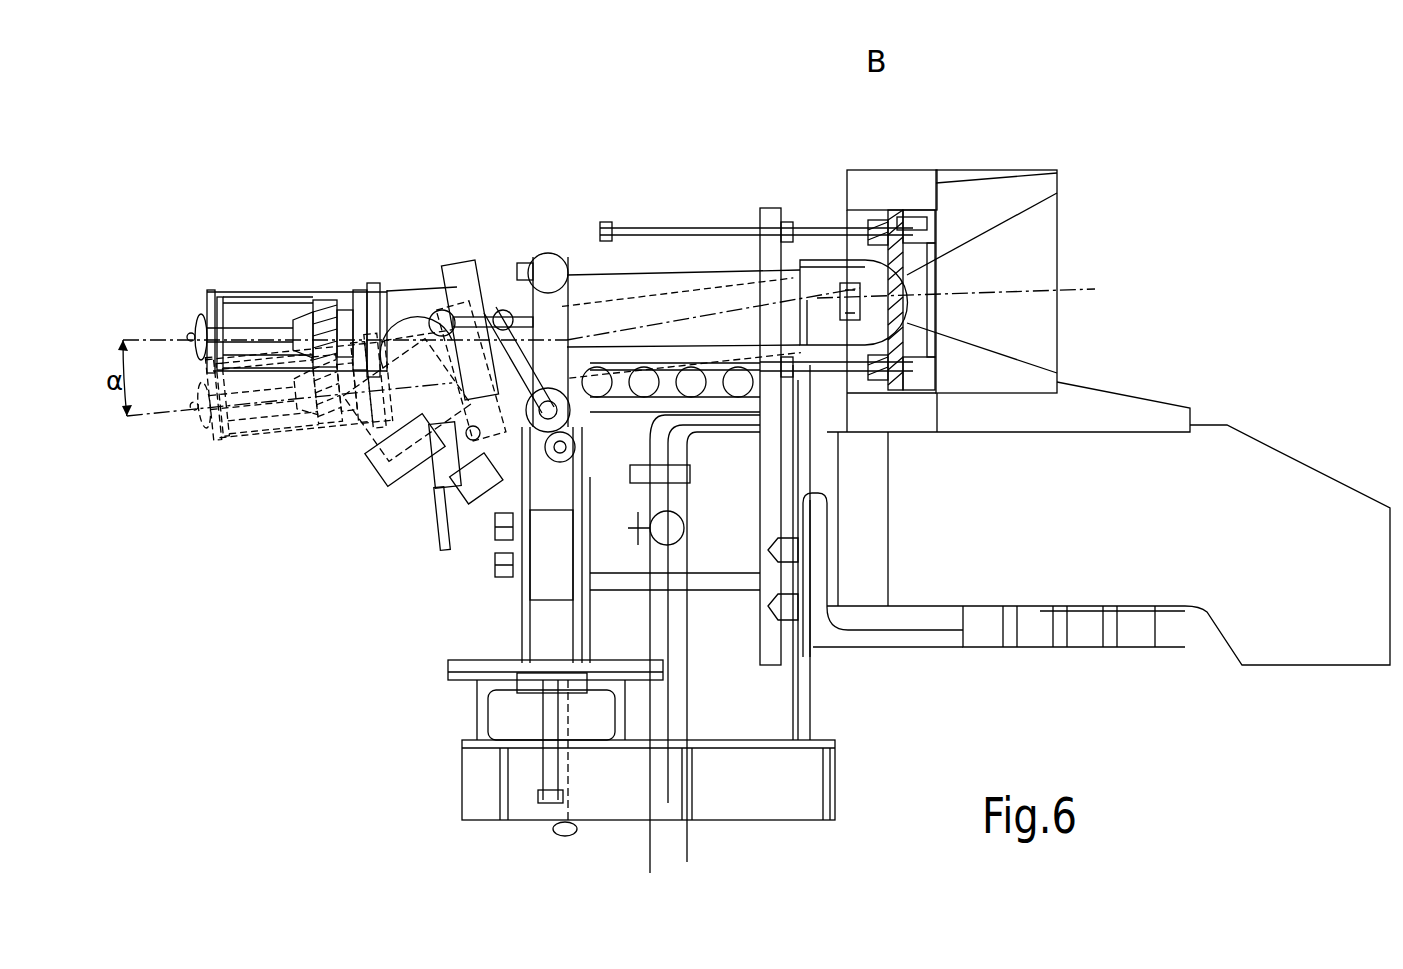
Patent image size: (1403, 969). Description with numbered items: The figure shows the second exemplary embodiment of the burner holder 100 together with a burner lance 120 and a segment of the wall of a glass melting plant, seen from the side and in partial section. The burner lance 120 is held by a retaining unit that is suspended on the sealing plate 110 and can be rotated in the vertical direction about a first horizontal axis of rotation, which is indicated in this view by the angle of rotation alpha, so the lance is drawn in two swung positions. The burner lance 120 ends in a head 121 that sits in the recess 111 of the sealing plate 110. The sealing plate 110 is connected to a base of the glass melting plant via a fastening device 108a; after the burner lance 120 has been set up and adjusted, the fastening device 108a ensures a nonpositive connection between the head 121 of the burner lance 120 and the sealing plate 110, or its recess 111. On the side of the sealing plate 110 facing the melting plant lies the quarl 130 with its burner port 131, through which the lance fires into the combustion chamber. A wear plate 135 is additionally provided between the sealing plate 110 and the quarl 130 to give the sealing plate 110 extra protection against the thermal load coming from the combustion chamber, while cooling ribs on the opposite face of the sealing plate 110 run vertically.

The burner holder 100 is at (1132, 244).
The fastening device 108a is at (776, 497).
The sealing plate 110 is at (893, 207).
The recess 111 is at (930, 250).
The burner lance 120 is at (593, 282).
The head of the burner lance 121 is at (860, 257).
The quarl 130 is at (988, 198).
The burner port 131 is at (1050, 230).
The wear plate 135 is at (893, 215).